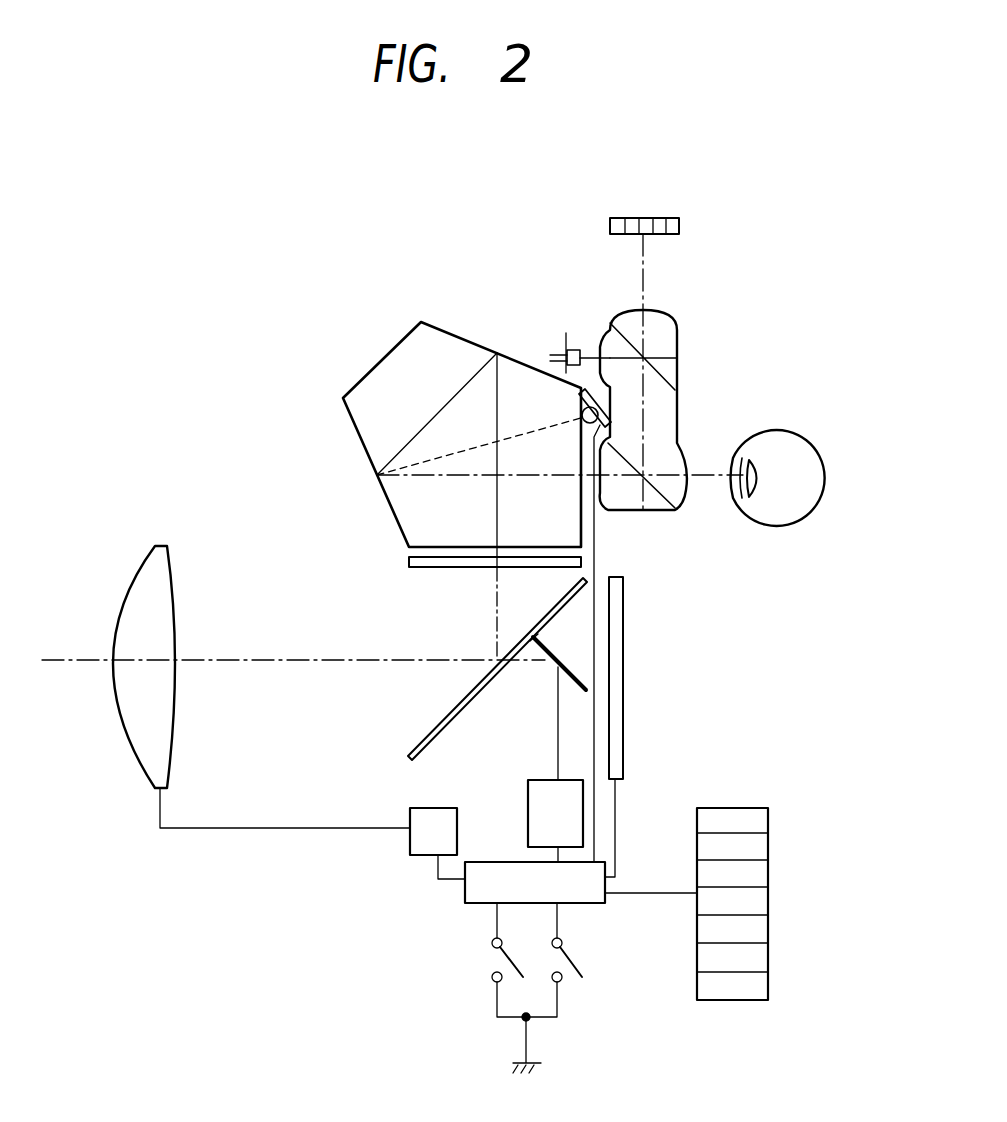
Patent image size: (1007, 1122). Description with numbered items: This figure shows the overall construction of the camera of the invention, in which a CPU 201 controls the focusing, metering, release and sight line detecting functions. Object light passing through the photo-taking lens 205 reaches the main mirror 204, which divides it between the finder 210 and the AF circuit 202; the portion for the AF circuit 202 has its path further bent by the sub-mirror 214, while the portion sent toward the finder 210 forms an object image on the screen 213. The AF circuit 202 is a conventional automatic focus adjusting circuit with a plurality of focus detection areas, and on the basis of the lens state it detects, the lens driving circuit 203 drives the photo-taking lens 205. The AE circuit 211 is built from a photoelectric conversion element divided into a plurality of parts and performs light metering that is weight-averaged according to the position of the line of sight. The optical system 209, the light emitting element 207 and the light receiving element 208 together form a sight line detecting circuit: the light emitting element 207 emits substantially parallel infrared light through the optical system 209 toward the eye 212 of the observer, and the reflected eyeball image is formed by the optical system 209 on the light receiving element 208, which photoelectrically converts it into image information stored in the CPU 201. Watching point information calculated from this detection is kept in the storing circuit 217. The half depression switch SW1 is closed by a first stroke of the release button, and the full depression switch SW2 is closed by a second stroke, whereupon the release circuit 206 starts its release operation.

The CPU 201 is at (463, 906).
The AF circuit 202 is at (527, 808).
The lens driving circuit 203 is at (408, 822).
The main mirror 204 is at (422, 727).
The photo-taking lens 205 is at (130, 748).
The release circuit 206 is at (624, 750).
The light emitting element 207 is at (566, 346).
The light receiving element 208 is at (640, 216).
The optical system 209 is at (683, 453).
The finder 210 is at (373, 367).
The AE circuit 211 is at (580, 438).
The eye of observer 212 is at (830, 453).
The screen 213 is at (405, 562).
The sub-mirror 214 is at (582, 670).
The storing circuit 217 is at (769, 847).
The half depression switch SW1 is at (581, 960).
The full depression switch SW2 is at (475, 960).